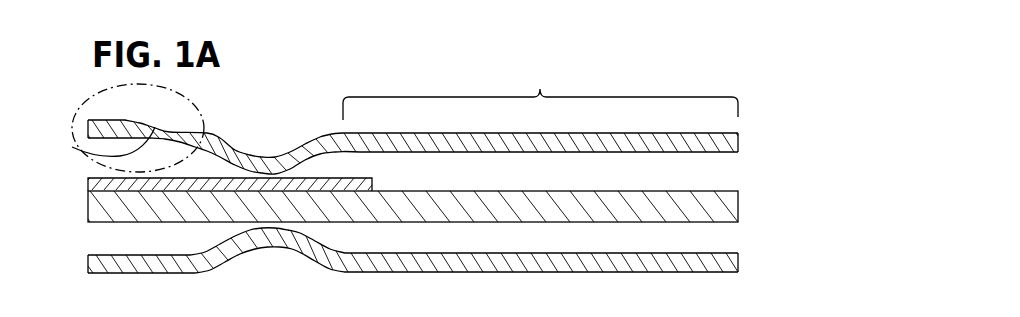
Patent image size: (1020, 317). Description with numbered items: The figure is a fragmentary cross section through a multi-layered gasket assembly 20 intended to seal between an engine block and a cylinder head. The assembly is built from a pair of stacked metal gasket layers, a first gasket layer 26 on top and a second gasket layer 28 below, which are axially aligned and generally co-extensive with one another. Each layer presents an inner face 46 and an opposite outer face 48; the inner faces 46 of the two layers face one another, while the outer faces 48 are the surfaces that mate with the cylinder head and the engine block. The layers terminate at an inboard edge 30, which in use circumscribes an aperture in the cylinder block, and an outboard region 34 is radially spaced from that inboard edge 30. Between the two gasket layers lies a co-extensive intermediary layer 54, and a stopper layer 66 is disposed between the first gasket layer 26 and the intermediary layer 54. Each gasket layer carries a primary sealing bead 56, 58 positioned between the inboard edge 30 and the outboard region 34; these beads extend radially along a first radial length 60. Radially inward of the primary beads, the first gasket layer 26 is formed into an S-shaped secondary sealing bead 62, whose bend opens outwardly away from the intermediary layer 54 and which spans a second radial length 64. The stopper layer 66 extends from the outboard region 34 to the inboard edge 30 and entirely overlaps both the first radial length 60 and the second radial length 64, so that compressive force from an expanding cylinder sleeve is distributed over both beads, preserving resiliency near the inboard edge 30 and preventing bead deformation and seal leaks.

The gasket assembly 20 is at (705, 80).
The first gasket layer 26 is at (424, 142).
The second gasket layer 28 is at (516, 273).
The inboard edge 30 is at (88, 263).
The outboard region 34 is at (540, 95).
The inner face 46 is at (608, 153).
The outer face 48 is at (598, 133).
The intermediary layer 54 is at (502, 191).
The primary sealing bead 56 is at (292, 161).
The primary sealing bead 58 is at (305, 246).
The first radial length 60 is at (333, 109).
The secondary sealing bead 62 is at (72, 147).
The second radial length 64 is at (198, 109).
The stopper layer 66 is at (88, 189).